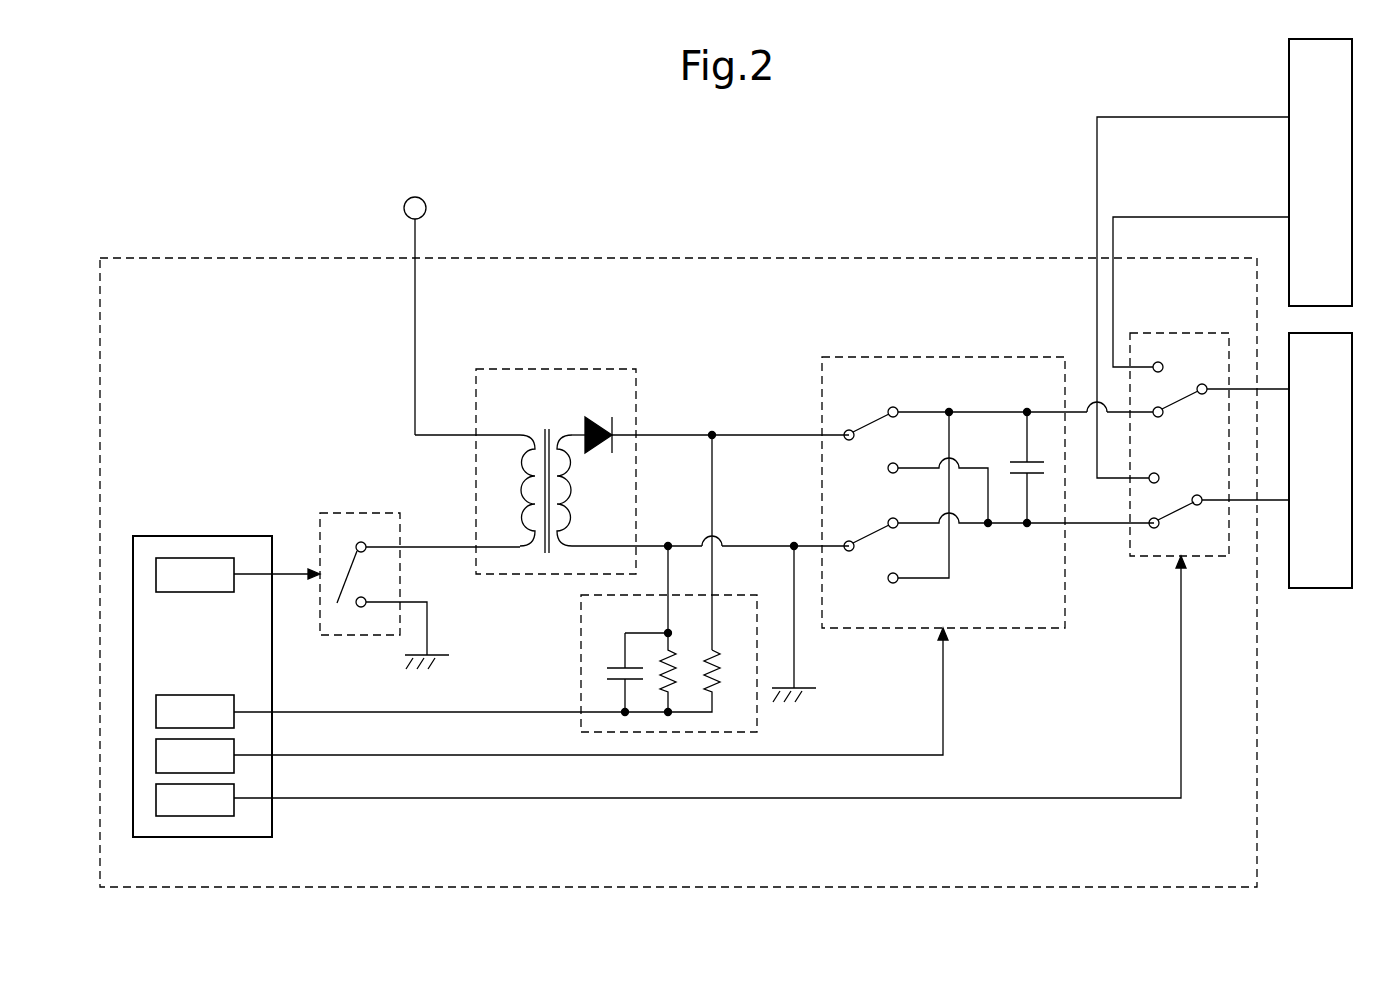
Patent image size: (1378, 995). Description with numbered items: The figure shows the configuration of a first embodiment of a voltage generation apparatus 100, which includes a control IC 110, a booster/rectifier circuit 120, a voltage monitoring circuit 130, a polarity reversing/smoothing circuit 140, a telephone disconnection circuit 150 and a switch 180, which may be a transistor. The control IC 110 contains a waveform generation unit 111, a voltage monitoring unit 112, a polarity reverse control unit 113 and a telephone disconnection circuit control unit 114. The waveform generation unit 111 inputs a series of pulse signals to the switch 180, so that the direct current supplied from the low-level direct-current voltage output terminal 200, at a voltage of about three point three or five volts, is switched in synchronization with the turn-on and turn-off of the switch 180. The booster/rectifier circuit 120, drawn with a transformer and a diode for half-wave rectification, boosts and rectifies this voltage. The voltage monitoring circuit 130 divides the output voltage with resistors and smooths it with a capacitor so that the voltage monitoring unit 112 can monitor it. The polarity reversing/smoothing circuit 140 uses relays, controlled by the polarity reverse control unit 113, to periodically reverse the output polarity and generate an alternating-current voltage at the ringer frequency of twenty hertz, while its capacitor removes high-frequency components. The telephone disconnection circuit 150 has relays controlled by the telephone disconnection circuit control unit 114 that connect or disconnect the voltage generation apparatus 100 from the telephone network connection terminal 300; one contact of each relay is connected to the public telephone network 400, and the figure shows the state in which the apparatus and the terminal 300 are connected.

The voltage generation apparatus 100 is at (150, 257).
The control integrated circuit 110 is at (200, 536).
The waveform generation unit 111 is at (172, 592).
The voltage monitoring unit 112 is at (173, 695).
The polarity reverse control unit 113 is at (234, 765).
The telephone disconnection circuit control unit 114 is at (234, 808).
The booster/rectifier circuit 120 is at (558, 369).
The voltage monitoring circuit 130 is at (580, 635).
The polarity reversing/smoothing circuit 140 is at (953, 357).
The telephone disconnection circuit 150 is at (1180, 333).
The switch 180 is at (362, 513).
The low-level direct-current voltage output terminal 200 is at (425, 202).
The telephone network connection terminal 300 is at (1317, 588).
The public telephone network 400 is at (1289, 75).